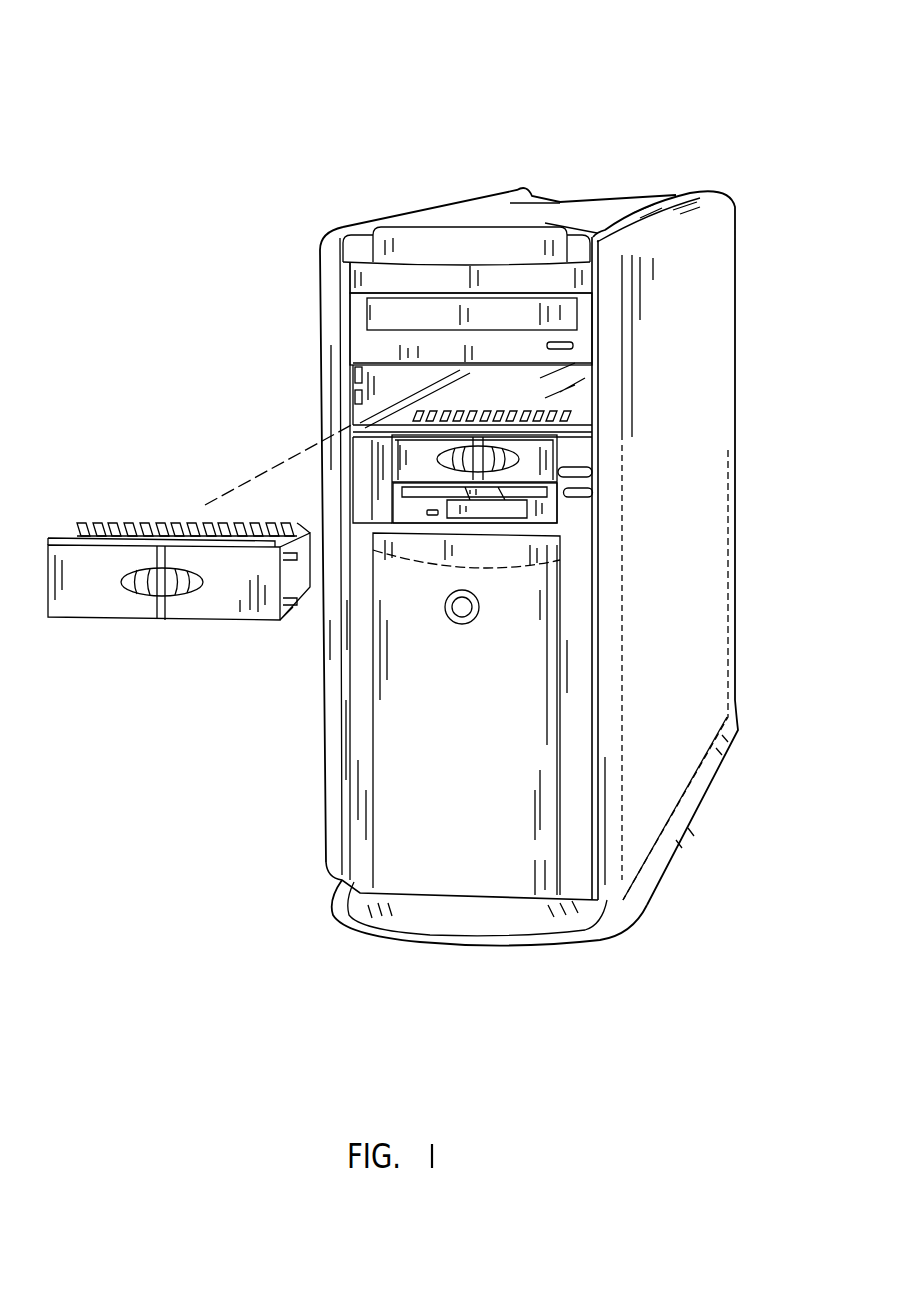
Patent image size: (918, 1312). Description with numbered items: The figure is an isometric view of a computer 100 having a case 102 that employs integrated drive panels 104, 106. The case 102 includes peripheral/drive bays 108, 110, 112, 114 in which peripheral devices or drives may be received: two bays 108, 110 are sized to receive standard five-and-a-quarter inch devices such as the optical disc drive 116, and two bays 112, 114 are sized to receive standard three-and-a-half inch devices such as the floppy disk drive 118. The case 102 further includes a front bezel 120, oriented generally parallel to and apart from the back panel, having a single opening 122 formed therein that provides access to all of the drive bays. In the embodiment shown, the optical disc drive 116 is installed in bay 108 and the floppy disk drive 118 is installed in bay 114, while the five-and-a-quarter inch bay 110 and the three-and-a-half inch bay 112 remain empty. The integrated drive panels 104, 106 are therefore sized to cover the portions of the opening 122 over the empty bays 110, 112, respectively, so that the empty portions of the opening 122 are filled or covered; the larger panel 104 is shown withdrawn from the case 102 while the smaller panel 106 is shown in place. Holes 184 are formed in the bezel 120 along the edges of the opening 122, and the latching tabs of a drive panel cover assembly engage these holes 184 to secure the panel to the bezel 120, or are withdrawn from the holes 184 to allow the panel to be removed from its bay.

The computer 100 is at (634, 103).
The case 102 is at (718, 482).
The integrated drive panel 104 is at (65, 570).
The integrated drive panel 106 is at (422, 470).
The peripheral/drive bay 108 is at (593, 323).
The peripheral/drive bay 110 is at (593, 397).
The peripheral/drive bay 112 is at (560, 446).
The peripheral/drive bay 114 is at (545, 505).
The optical disc drive 116 is at (380, 313).
The floppy disk drive 118 is at (420, 510).
The front bezel 120 is at (367, 470).
The opening 122 is at (560, 363).
The holes 184 is at (356, 405).